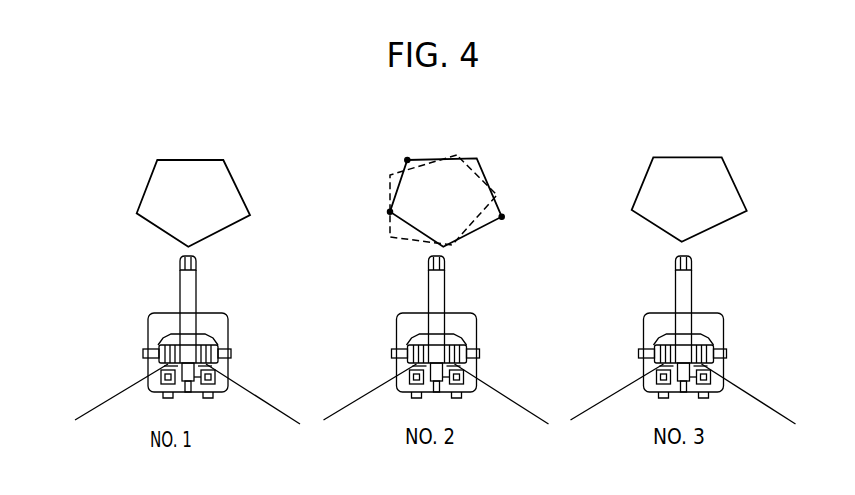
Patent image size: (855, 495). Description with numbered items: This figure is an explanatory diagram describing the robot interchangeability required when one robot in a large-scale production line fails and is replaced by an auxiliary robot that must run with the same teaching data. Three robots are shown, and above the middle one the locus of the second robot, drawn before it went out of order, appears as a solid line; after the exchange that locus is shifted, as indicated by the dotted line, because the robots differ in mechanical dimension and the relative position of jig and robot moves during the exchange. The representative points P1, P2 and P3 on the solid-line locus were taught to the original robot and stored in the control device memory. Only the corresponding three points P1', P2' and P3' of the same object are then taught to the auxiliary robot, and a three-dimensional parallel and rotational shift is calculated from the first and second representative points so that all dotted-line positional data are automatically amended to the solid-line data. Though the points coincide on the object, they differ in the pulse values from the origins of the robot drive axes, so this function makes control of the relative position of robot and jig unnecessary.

The first representative point P1 is at (406, 140).
The second representative point P2 is at (381, 208).
The third representative point P3 is at (528, 208).